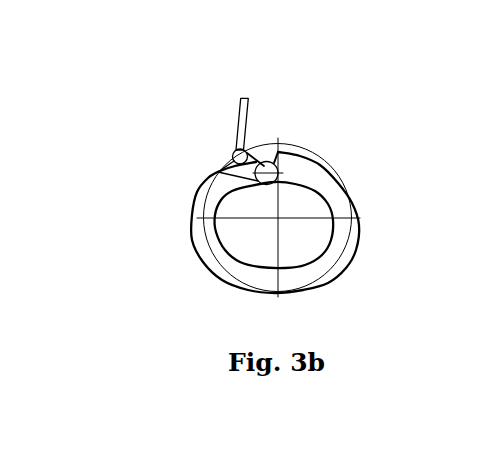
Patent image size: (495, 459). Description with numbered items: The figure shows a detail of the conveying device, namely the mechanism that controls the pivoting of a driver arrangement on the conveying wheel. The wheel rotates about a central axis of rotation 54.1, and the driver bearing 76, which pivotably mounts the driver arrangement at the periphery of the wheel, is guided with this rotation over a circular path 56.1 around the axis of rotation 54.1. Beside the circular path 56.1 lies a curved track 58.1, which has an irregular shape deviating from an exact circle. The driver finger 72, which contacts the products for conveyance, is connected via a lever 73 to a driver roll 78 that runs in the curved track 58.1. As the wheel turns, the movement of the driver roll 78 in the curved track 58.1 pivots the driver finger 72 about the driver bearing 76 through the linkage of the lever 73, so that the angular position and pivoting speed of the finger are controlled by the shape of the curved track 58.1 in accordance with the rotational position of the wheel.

The central axis of rotation 54.1 is at (279, 218).
The circular path 56.1 is at (298, 147).
The curved track 58.1 is at (198, 250).
The driver finger 72 is at (240, 112).
The lever 73 is at (258, 160).
The driver bearing 76 is at (233, 156).
The driver roll 78 is at (283, 173).